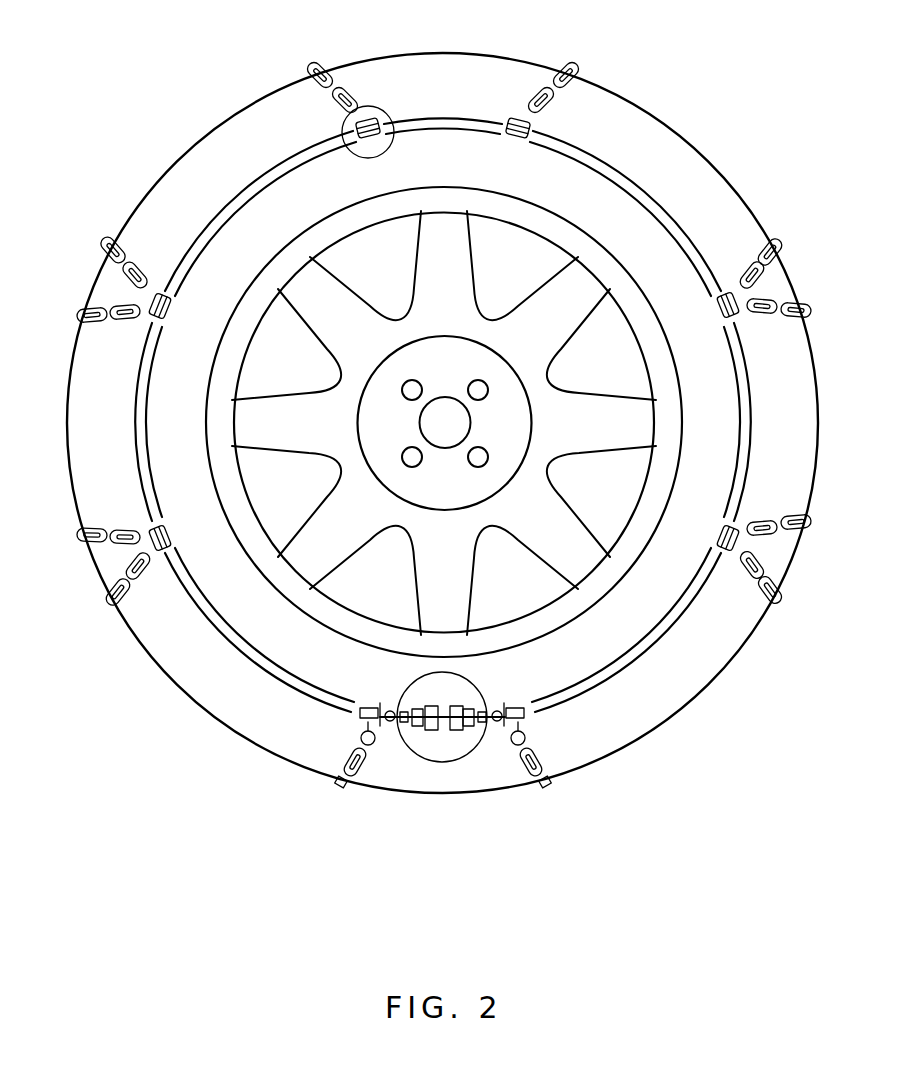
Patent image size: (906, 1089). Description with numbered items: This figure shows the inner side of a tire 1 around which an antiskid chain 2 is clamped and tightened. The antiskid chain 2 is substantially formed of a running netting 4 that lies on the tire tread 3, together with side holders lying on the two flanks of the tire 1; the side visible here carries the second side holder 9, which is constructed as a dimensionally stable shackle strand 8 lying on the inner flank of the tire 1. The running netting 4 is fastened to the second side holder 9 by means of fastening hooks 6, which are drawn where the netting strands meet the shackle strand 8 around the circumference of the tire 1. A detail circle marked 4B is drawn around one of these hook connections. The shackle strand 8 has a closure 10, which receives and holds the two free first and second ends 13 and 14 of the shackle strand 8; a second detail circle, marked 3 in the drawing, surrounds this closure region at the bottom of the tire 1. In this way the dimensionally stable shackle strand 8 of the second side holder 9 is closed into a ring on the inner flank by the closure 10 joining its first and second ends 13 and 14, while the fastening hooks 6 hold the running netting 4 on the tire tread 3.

The tire 1 is at (745, 234).
The antiskid chain 2 is at (72, 217).
The tire tread 3 is at (455, 761).
The running netting 4 is at (103, 608).
The detail region shown in FIG. 4B (hook connection) 4B is at (385, 112).
The fastening hooks 6 is at (347, 120).
The shackle strand 8 is at (665, 215).
The second side holder 9 is at (230, 668).
The closure 10 is at (430, 755).
The first end 13 is at (330, 735).
The second end 14 is at (566, 726).